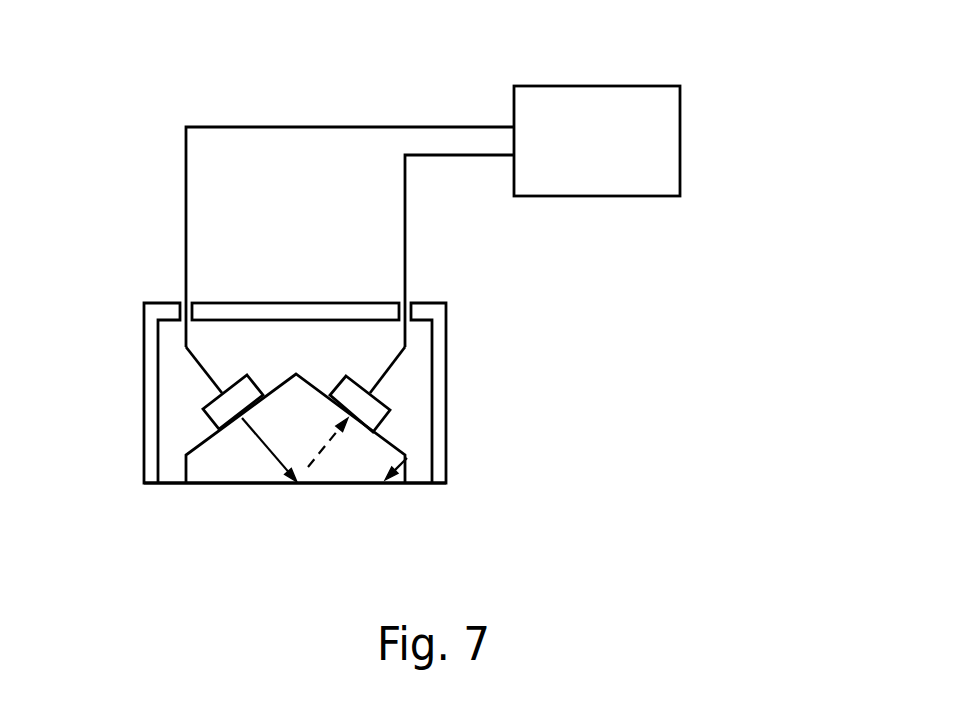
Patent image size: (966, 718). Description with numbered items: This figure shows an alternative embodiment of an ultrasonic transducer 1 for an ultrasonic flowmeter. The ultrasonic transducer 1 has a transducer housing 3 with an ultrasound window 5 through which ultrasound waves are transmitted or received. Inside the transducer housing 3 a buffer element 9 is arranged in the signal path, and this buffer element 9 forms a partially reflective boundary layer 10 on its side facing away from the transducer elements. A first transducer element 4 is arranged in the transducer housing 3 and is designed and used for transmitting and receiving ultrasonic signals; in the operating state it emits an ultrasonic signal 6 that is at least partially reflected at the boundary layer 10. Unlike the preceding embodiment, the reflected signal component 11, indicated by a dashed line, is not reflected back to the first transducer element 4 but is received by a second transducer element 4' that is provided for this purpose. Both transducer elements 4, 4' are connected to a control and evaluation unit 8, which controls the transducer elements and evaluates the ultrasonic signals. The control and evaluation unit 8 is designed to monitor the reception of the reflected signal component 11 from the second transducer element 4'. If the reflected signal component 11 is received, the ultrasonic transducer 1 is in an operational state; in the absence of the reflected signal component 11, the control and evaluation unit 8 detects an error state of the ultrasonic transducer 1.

The ultrasonic transducer 1 is at (100, 71).
The transducer housing 3 is at (440, 328).
The first transducer element 4 is at (139, 388).
The second transducer element 4' is at (580, 389).
The ultrasound window 5 is at (440, 473).
The ultrasonic signal 6 is at (265, 447).
The control and evaluation unit 8 is at (662, 155).
The buffer element 9 is at (230, 450).
The boundary layer 10 is at (407, 458).
The reflected signal component 11 is at (308, 467).